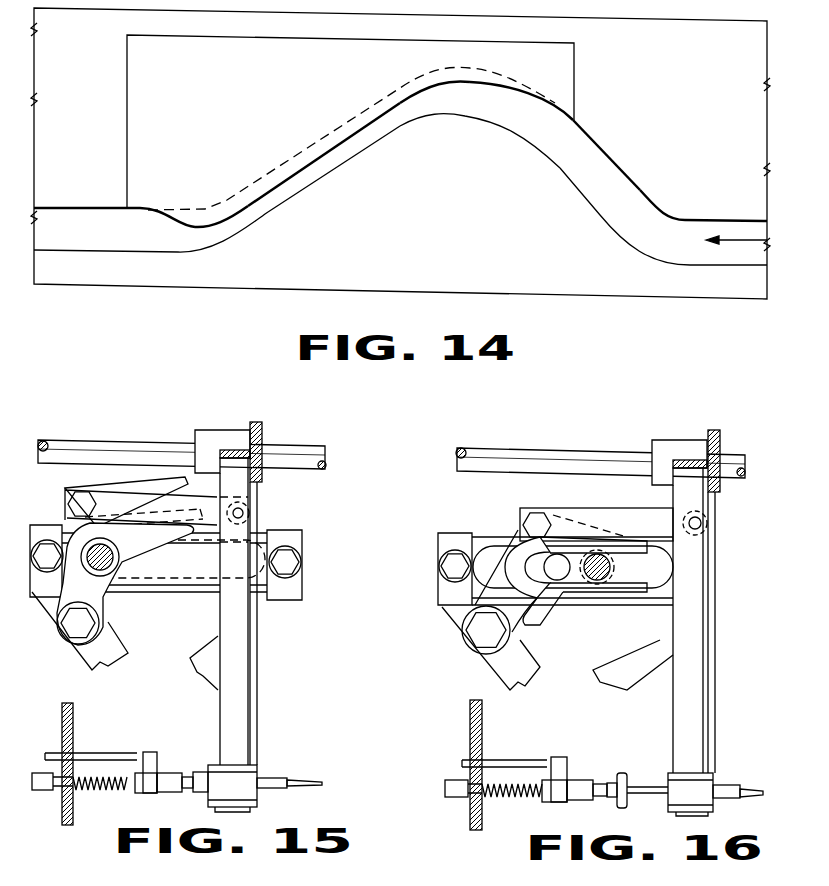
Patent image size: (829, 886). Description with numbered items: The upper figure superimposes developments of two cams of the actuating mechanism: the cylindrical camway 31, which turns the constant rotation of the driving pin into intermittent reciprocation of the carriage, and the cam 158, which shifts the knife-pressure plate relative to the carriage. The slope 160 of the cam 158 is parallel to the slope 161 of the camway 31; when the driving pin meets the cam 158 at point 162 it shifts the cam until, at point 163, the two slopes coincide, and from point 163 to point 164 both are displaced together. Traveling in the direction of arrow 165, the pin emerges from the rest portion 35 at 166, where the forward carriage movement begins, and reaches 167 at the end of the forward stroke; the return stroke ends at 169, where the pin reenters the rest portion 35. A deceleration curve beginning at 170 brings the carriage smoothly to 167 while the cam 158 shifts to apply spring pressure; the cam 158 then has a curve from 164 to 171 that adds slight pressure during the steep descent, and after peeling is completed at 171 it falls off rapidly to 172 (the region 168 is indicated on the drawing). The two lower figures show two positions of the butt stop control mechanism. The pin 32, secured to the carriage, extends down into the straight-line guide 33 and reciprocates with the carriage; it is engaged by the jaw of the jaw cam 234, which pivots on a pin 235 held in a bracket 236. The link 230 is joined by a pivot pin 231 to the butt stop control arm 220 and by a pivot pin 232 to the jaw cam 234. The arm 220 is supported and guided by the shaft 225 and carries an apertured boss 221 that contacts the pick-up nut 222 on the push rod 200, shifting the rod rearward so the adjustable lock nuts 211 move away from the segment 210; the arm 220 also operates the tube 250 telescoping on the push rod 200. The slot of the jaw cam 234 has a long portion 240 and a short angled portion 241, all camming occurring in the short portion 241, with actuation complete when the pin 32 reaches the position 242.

In FIG. 14, the cylindrical camway 31 is at (372, 153).
In FIG. 14, the rest portion of the camway 35 is at (60, 208).
In FIG. 14, the cam 158 is at (223, 111).
In FIG. 14, the slope of the cam 160 is at (310, 163).
In FIG. 14, the slope of the camway 161 is at (348, 116).
In FIG. 14, the point of cam encounter 162 is at (563, 118).
In FIG. 14, the point of slope coincidence 163 is at (418, 82).
In FIG. 14, the point of uniform pressure end 164 is at (265, 198).
In FIG. 14, the arrow 165 is at (738, 245).
In FIG. 14, the point of emergence from rest portion 166 is at (696, 198).
In FIG. 14, the forward stroke end point 167 is at (462, 115).
In FIG. 14, the descending die surface 168 is at (606, 157).
In FIG. 14, the return stroke end point 169 is at (178, 253).
In FIG. 14, the deceleration curve start 170 is at (532, 148).
In FIG. 14, the point of peeling completion 171 is at (222, 192).
In FIG. 14, the cam fall-off point 172 is at (157, 189).
In FIG. 15, the push rod 200 is at (302, 783).
In FIG. 16, the push rod 200 is at (777, 784).
In FIG. 15, the segment 210 is at (62, 815).
In FIG. 16, the segment 210 is at (470, 823).
In FIG. 15, the adjustable lock nuts 211 is at (50, 790).
In FIG. 16, the adjustable lock nuts 211 is at (458, 796).
In FIG. 15, the butt stop control arm 220 is at (248, 730).
In FIG. 16, the butt stop control arm 220 is at (673, 725).
In FIG. 15, the apertured boss 221 is at (222, 765).
In FIG. 16, the apertured boss 221 is at (673, 785).
In FIG. 15, the pick-up nut 222 is at (205, 770).
In FIG. 16, the pick-up nut 222 is at (623, 773).
In FIG. 15, the shaft 225 is at (105, 443).
In FIG. 16, the shaft 225 is at (600, 463).
In FIG. 15, the link 230 is at (182, 518).
In FIG. 16, the link 230 is at (643, 515).
In FIG. 15, the pivot pin 231 is at (240, 513).
In FIG. 16, the pivot pin 231 is at (695, 523).
In FIG. 15, the pivot pin 232 is at (75, 502).
In FIG. 15, the jaw cam 234 is at (137, 483).
In FIG. 16, the jaw cam 234 is at (640, 590).
In FIG. 15, the pin 235 is at (72, 627).
In FIG. 16, the pin 235 is at (465, 630).
In FIG. 15, the bracket 236 is at (110, 642).
In FIG. 16, the long portion of the slot 240 is at (614, 587).
In FIG. 16, the short portion of the slot 241 is at (553, 592).
In FIG. 16, the pin position 242 is at (560, 600).
In FIG. 15, the tube 250 is at (268, 790).
In FIG. 16, the tube 250 is at (723, 787).
In FIG. 15, the pin 32 is at (113, 565).
In FIG. 16, the pin 32 is at (612, 565).
In FIG. 15, the straight-line guide 33 is at (197, 538).
In FIG. 16, the straight-line guide 33 is at (507, 532).